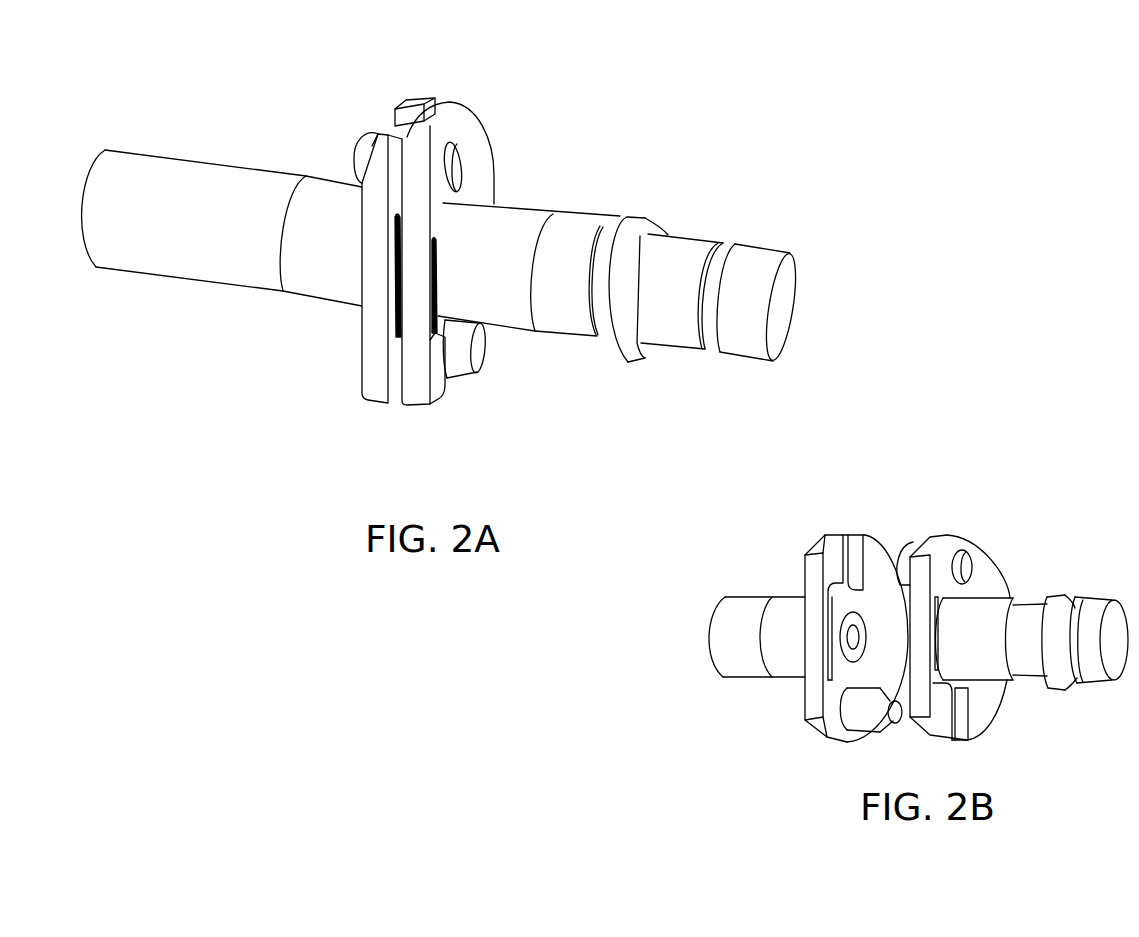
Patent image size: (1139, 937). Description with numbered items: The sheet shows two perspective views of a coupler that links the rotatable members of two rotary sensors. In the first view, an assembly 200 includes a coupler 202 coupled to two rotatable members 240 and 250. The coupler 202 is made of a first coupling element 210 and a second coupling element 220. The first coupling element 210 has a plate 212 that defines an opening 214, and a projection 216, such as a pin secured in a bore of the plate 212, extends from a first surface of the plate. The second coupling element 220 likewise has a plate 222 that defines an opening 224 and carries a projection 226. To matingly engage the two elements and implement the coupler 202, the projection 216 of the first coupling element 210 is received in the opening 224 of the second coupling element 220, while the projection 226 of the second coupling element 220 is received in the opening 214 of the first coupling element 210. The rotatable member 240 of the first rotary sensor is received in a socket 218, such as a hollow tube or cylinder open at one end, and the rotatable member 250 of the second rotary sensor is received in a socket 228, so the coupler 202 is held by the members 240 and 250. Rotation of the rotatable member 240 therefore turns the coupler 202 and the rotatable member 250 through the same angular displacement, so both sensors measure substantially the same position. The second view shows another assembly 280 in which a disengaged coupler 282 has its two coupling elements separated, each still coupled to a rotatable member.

In FIG. 2A, the assembly 200 is at (579, 66).
In FIG. 2A, the coupler 202 is at (456, 90).
In FIG. 2A, the first coupling element 210 is at (417, 92).
In FIG. 2A, the plate 212 is at (370, 387).
In FIG. 2A, the opening 214 is at (389, 108).
In FIG. 2A, the projection 216 is at (474, 372).
In FIG. 2A, the socket 218 is at (310, 298).
In FIG. 2A, the second coupling element 220 is at (494, 118).
In FIG. 2A, the plate 222 is at (421, 407).
In FIG. 2A, the opening 224 is at (453, 394).
In FIG. 2A, the projection 226 is at (368, 132).
In FIG. 2A, the socket 228 is at (531, 203).
In FIG. 2A, the rotatable member 240 is at (195, 162).
In FIG. 2A, the rotatable member 250 is at (684, 230).
In FIG. 2B, the assembly 280 is at (867, 497).
In FIG. 2B, the disengaged coupler 282 is at (931, 516).